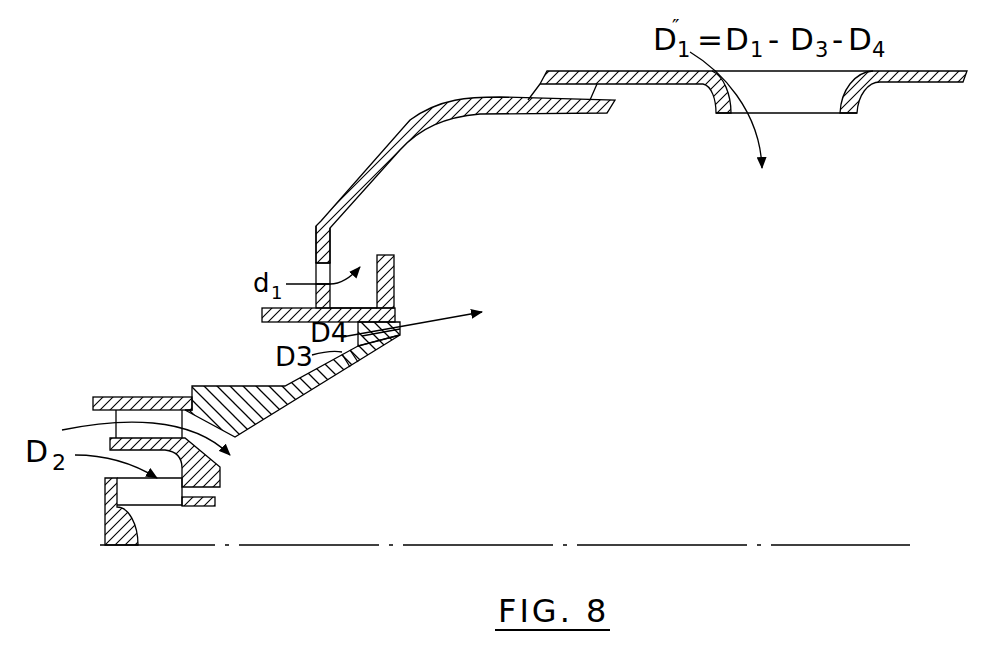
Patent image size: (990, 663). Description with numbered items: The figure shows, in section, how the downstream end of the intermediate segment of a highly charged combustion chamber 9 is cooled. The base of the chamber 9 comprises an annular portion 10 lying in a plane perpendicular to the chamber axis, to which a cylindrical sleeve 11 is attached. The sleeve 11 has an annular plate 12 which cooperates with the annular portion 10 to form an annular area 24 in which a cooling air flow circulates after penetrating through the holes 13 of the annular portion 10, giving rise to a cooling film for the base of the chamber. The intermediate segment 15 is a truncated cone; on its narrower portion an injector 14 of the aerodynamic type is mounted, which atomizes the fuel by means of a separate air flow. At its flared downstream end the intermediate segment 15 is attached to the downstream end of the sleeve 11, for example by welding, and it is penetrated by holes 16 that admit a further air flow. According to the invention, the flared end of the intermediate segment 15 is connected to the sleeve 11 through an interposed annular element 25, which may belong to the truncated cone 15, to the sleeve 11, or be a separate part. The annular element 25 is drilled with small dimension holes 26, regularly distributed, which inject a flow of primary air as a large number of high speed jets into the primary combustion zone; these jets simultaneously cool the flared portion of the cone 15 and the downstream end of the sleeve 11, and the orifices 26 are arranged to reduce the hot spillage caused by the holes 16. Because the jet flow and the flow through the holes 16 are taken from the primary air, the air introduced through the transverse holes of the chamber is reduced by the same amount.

The chamber 9 is at (353, 162).
The annular portion 10 is at (316, 240).
The cylindrical sleeve 11 is at (262, 313).
The annular plate 12 is at (394, 270).
The holes 13 is at (316, 265).
The injector 14 is at (105, 527).
The intermediate segment 15 is at (322, 410).
The holes 16 is at (349, 361).
The annular area 24 is at (348, 273).
The annular element 25 is at (384, 319).
The small dimension holes 26 is at (402, 331).